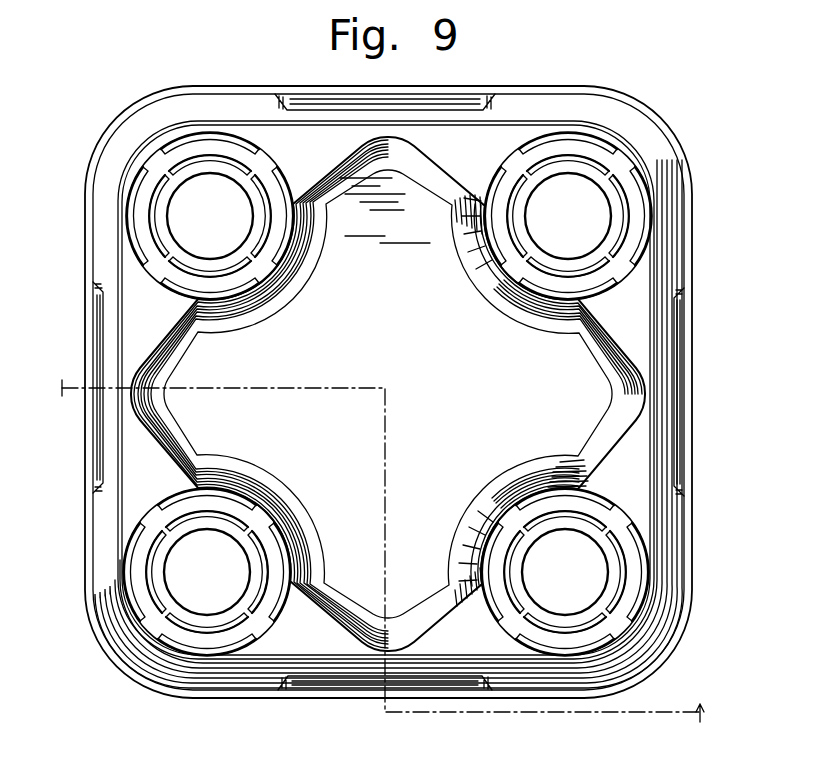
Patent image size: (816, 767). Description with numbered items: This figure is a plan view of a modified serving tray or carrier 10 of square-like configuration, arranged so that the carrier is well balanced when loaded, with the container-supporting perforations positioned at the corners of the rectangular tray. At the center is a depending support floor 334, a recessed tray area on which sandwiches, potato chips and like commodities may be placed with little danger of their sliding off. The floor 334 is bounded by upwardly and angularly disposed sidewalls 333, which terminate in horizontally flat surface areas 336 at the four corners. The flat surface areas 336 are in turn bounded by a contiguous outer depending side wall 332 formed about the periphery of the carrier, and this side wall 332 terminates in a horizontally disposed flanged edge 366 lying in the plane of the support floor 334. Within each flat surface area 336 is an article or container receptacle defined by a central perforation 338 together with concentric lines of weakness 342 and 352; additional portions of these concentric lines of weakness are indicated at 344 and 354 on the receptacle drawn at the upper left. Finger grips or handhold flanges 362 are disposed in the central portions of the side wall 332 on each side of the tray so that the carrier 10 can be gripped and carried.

The section line 10 is at (380, 551).
The outer depending side wall 332 is at (630, 123).
The sidewalls 333 is at (258, 476).
The support floor 334 is at (458, 395).
The flat surface areas 336 is at (294, 157).
The central perforation 338 is at (251, 208).
The line of weakness 342 is at (617, 263).
The arcuate slots of cup recess 344 is at (168, 256).
The line of weakness 352 is at (490, 180).
The arcuate slot 354 is at (312, 183).
The finger grips or handhold flanges 362 is at (90, 446).
The flanged edge 366 is at (118, 658).